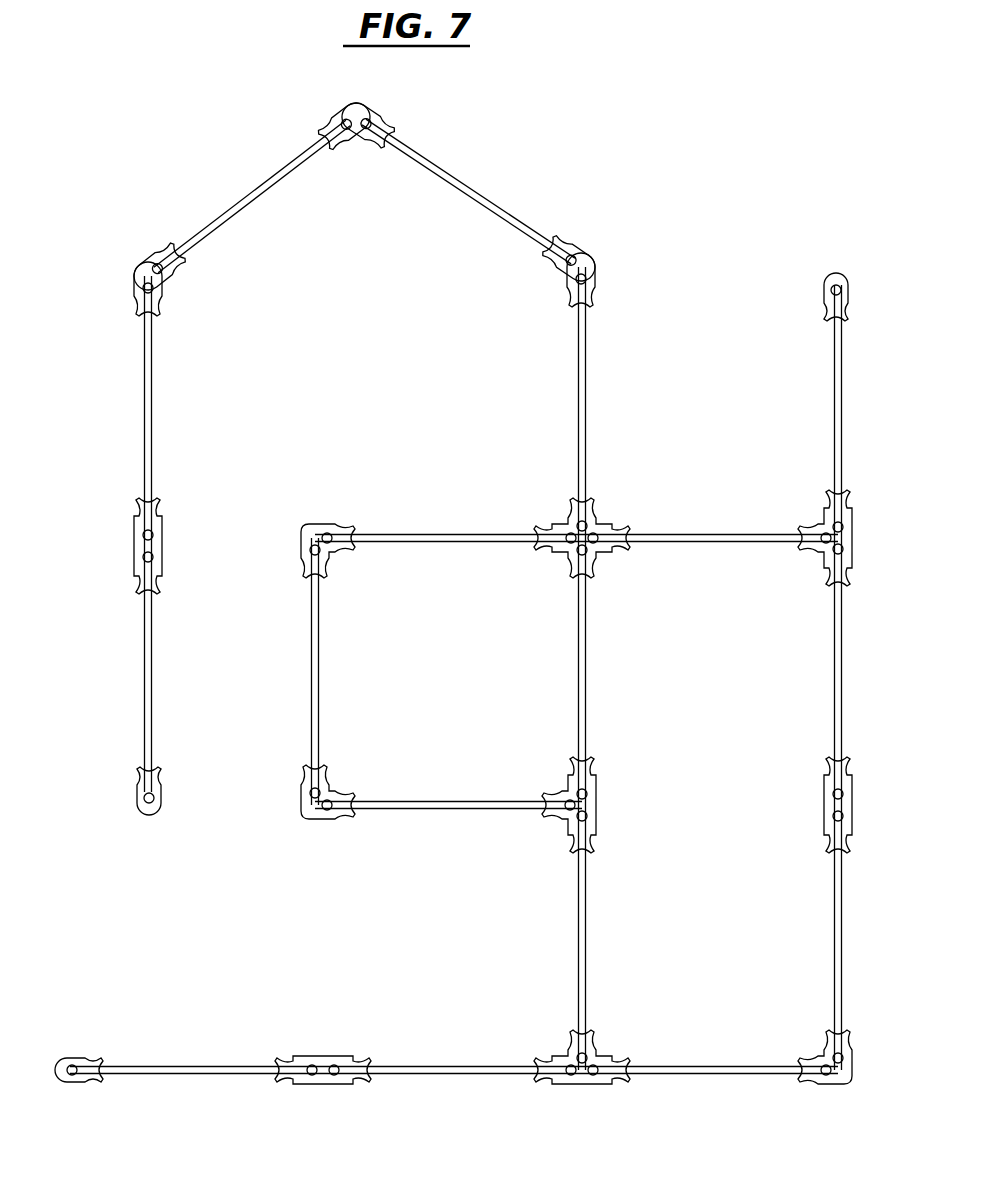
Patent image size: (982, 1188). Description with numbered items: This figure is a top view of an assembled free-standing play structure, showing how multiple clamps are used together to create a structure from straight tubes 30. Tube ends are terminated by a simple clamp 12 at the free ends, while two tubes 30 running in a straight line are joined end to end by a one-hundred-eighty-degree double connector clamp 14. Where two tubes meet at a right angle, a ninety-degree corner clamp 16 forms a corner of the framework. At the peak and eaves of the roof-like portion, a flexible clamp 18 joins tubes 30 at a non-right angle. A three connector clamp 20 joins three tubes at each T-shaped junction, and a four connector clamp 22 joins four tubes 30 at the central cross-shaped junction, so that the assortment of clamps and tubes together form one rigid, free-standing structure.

The simple clamp 12 is at (828, 292).
The 180 degree double connector clamp 14 is at (140, 550).
The 90 degree corner clamp 16 is at (312, 528).
The flexible clamp 18 is at (385, 138).
The three connector clamp 20 is at (830, 532).
The four connector clamp 22 is at (590, 520).
The tube 30 is at (255, 208).